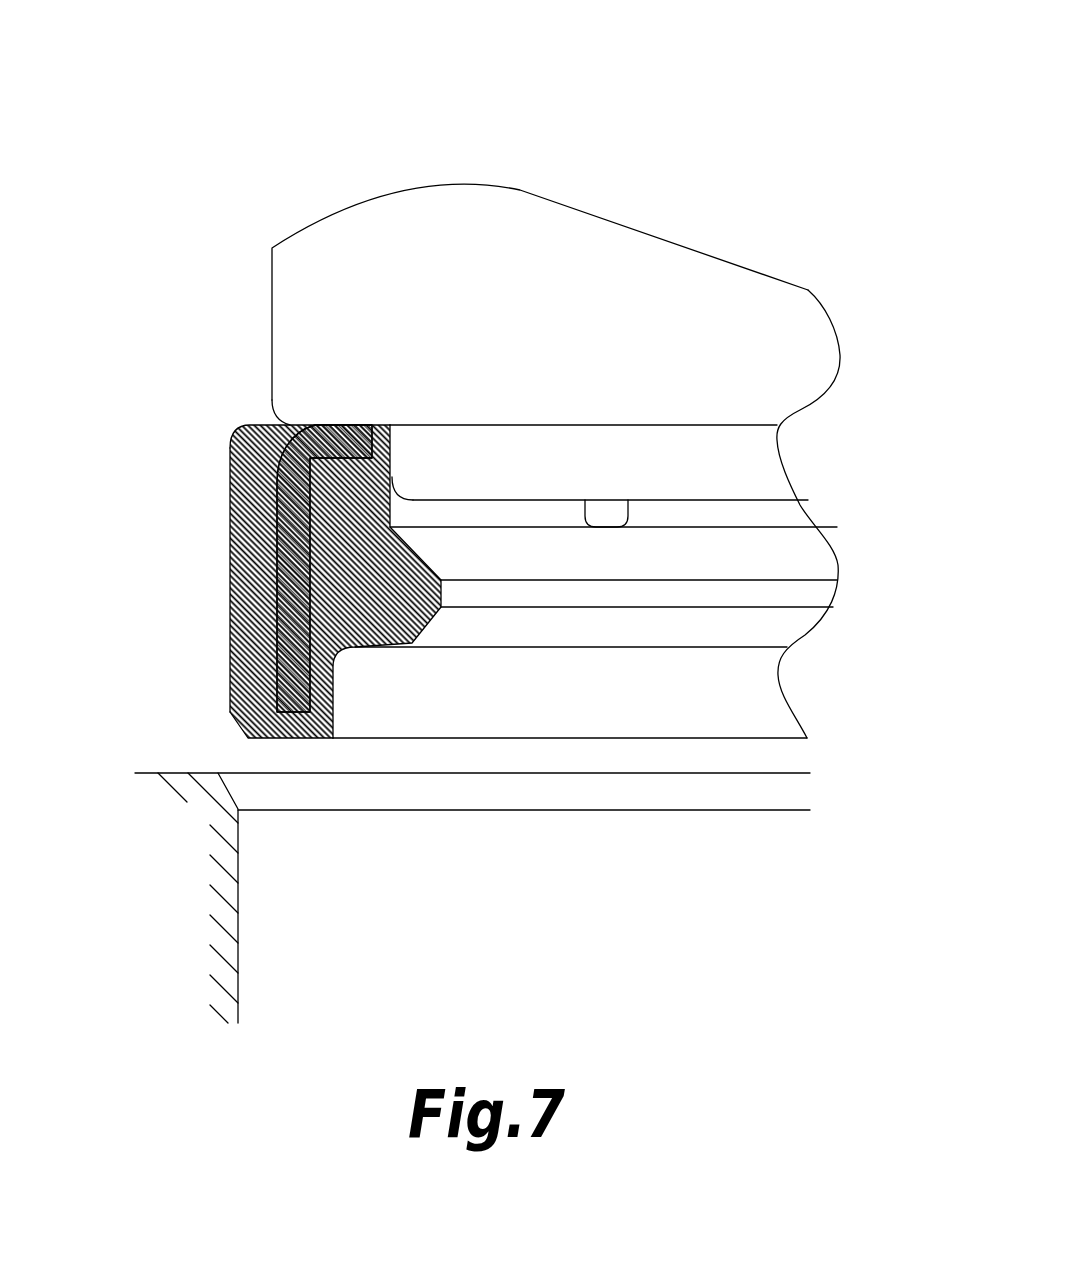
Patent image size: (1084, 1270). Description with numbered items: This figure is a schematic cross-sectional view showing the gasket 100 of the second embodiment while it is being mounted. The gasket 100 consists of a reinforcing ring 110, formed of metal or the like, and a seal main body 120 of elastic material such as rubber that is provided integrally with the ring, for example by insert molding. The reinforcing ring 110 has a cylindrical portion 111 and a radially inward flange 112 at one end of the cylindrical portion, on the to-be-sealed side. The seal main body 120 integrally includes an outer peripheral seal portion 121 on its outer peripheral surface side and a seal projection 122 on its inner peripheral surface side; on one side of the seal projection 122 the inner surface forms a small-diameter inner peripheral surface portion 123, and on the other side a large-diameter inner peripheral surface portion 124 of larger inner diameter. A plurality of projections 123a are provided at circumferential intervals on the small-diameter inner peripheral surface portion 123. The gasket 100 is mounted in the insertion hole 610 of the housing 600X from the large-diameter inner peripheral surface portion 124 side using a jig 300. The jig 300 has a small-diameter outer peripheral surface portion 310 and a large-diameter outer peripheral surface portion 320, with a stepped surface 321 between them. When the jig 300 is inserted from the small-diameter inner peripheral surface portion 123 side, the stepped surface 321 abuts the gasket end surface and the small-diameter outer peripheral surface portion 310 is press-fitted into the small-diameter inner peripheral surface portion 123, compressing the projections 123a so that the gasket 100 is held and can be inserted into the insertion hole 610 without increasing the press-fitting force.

The gasket 100 is at (501, 623).
The reinforcing ring 110 is at (249, 521).
The cylindrical portion 111 is at (290, 682).
The radially inward flange 112 is at (240, 425).
The outer peripheral seal portion 121 is at (230, 513).
The seal main body 120 is at (641, 635).
The seal projection 122 is at (445, 593).
The small-diameter inner peripheral surface portion 123 is at (670, 460).
The projections 123a is at (395, 450).
The large-diameter inner peripheral surface portion 124 is at (337, 697).
The jig 300 is at (554, 393).
The small-diameter outer peripheral surface portion 310 is at (690, 443).
The large-diameter outer peripheral surface portion 320 is at (493, 440).
The stepped surface 321 is at (343, 427).
The housing 600X is at (466, 898).
The insertion hole 610 is at (240, 913).